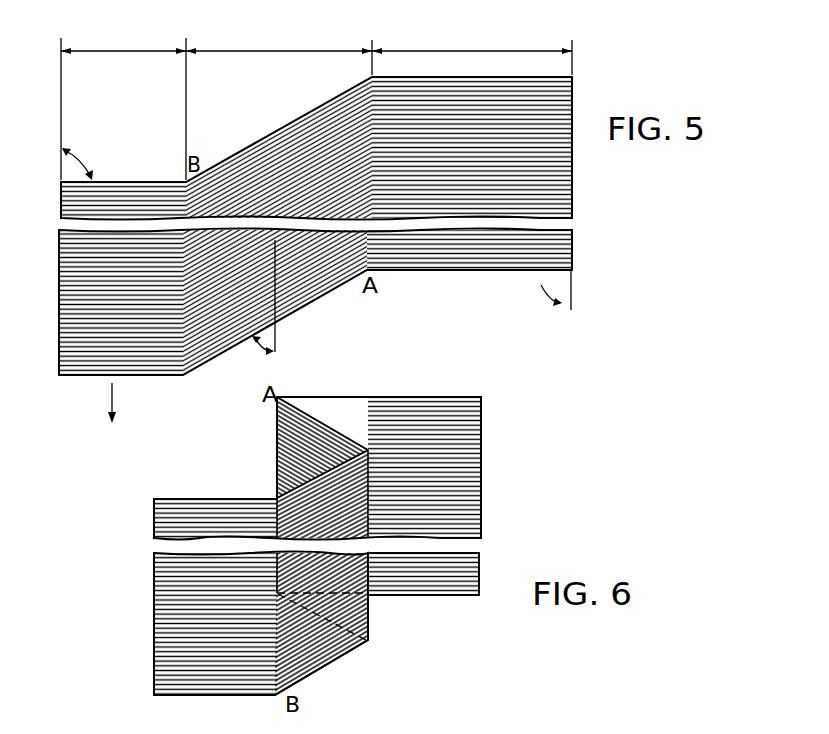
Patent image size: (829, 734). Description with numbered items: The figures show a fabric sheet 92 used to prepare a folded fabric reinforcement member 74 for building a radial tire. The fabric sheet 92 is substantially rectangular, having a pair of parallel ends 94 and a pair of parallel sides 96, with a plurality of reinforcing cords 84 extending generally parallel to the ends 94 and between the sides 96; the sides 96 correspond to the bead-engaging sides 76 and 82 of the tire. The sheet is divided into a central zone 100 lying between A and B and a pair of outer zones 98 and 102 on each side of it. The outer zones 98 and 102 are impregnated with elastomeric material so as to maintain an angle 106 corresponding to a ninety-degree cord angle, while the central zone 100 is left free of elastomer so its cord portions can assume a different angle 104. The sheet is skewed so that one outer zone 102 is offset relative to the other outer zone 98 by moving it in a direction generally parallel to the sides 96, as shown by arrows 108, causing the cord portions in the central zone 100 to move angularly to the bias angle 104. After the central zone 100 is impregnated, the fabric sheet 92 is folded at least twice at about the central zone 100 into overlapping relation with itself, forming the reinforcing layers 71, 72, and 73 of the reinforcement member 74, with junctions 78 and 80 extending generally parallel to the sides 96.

In FIG. 6, the reinforcing layer 71 is at (413, 408).
In FIG. 6, the reinforcing layer 72 is at (291, 457).
In FIG. 6, the reinforcing layer 73 is at (337, 650).
In FIG. 5, the folded fabric reinforcement member 74 is at (601, 37).
In FIG. 6, the folded fabric reinforcement member 74 is at (494, 432).
In FIG. 6, the bead-engaging side 76 is at (470, 569).
In FIG. 6, the junction 78 is at (277, 430).
In FIG. 6, the junction 80 is at (370, 608).
In FIG. 6, the bead-engaging side 82 is at (170, 573).
In FIG. 5, the reinforcing cords 84 is at (498, 254).
In FIG. 6, the reinforcing cords 84 is at (170, 652).
In FIG. 5, the fabric sheet 92 is at (575, 98).
In FIG. 5, the parallel ends 94 is at (456, 76).
In FIG. 6, the parallel ends 94 is at (470, 397).
In FIG. 5, the parallel sides 96 is at (572, 152).
In FIG. 6, the parallel sides 96 is at (481, 495).
In FIG. 5, the outer zone 98 is at (504, 51).
In FIG. 5, the central zone 100 is at (259, 52).
In FIG. 5, the outer zone 102 is at (120, 52).
In FIG. 5, the bias angle 104 is at (260, 345).
In FIG. 5, the angle 106 is at (82, 158).
In FIG. 5, the arrows 108 is at (108, 398).